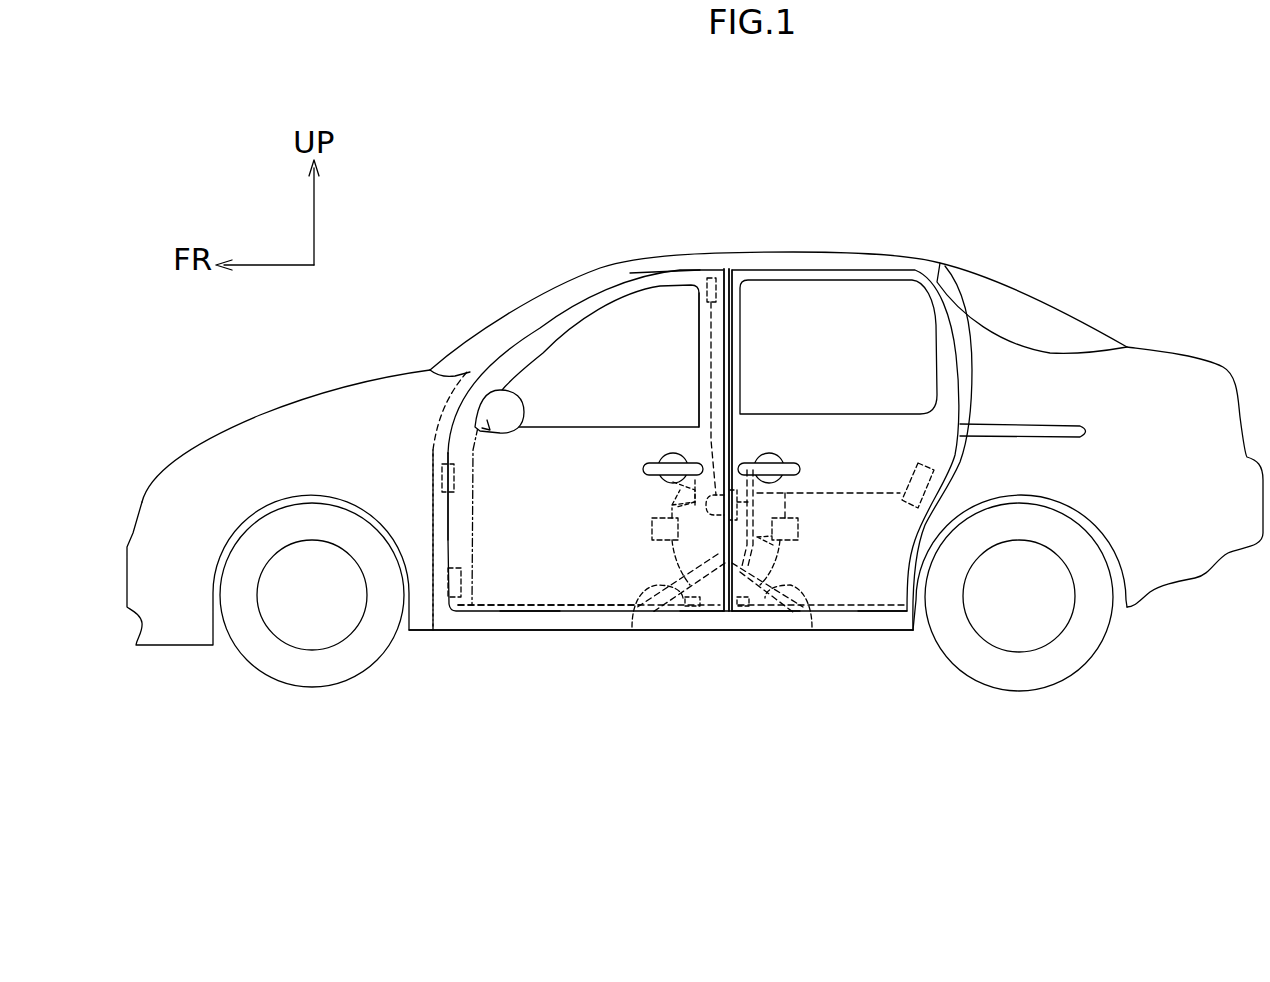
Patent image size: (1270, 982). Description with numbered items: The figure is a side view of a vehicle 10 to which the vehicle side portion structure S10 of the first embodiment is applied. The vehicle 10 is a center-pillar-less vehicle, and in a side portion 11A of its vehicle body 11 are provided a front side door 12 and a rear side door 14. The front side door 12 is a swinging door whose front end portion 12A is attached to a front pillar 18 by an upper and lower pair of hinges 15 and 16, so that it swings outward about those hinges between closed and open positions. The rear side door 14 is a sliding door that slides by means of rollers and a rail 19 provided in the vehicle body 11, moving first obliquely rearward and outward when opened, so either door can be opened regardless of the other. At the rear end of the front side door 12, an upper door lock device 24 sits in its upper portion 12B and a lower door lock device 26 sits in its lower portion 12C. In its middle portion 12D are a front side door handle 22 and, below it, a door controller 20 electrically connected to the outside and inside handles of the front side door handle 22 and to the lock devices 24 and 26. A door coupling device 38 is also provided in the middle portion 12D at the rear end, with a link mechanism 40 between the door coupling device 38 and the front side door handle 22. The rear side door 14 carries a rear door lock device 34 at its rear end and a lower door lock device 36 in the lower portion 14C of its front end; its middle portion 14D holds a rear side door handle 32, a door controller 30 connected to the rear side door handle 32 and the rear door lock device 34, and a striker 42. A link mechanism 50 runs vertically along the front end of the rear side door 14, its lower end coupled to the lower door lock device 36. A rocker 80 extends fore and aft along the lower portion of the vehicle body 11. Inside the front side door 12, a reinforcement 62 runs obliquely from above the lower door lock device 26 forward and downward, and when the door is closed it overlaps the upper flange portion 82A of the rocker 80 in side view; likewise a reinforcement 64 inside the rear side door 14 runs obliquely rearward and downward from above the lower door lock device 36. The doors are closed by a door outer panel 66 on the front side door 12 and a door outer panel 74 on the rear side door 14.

The vehicle 10 is at (790, 213).
The vehicle body 11 is at (286, 436).
The side portion 11A is at (427, 398).
The front side door 12 is at (571, 592).
The front end portion 12A is at (465, 452).
The upper portion 12B is at (677, 278).
The lower portion 12C is at (713, 597).
The middle portion 12D is at (700, 440).
The rear side door 14 is at (859, 591).
The lower portion 14C is at (763, 600).
The middle portion 14D is at (750, 442).
The hinge 15 is at (441, 478).
The hinge 16 is at (448, 588).
The front pillar 18 is at (433, 517).
The rail 19 is at (1013, 424).
The door controller 20 is at (652, 528).
The front side door handle 22 is at (665, 460).
The upper door lock device 24 is at (705, 278).
The lower door lock device 26 is at (673, 597).
The door controller 30 is at (800, 527).
The rear side door handle 32 is at (770, 466).
The rear door lock device 34 is at (905, 466).
The lower door lock device 36 is at (747, 597).
The door coupling device 38 is at (672, 505).
The link mechanism 40 is at (693, 493).
The striker 42 is at (722, 490).
The link mechanism 50 is at (767, 540).
The reinforcement 62 is at (673, 587).
The reinforcement 64 is at (790, 593).
The door outer panel 66 is at (533, 587).
The door outer panel 74 is at (890, 580).
The rocker 80 is at (590, 625).
The upper flange portion 82A is at (513, 603).
The vehicle side portion structure S10 is at (701, 672).